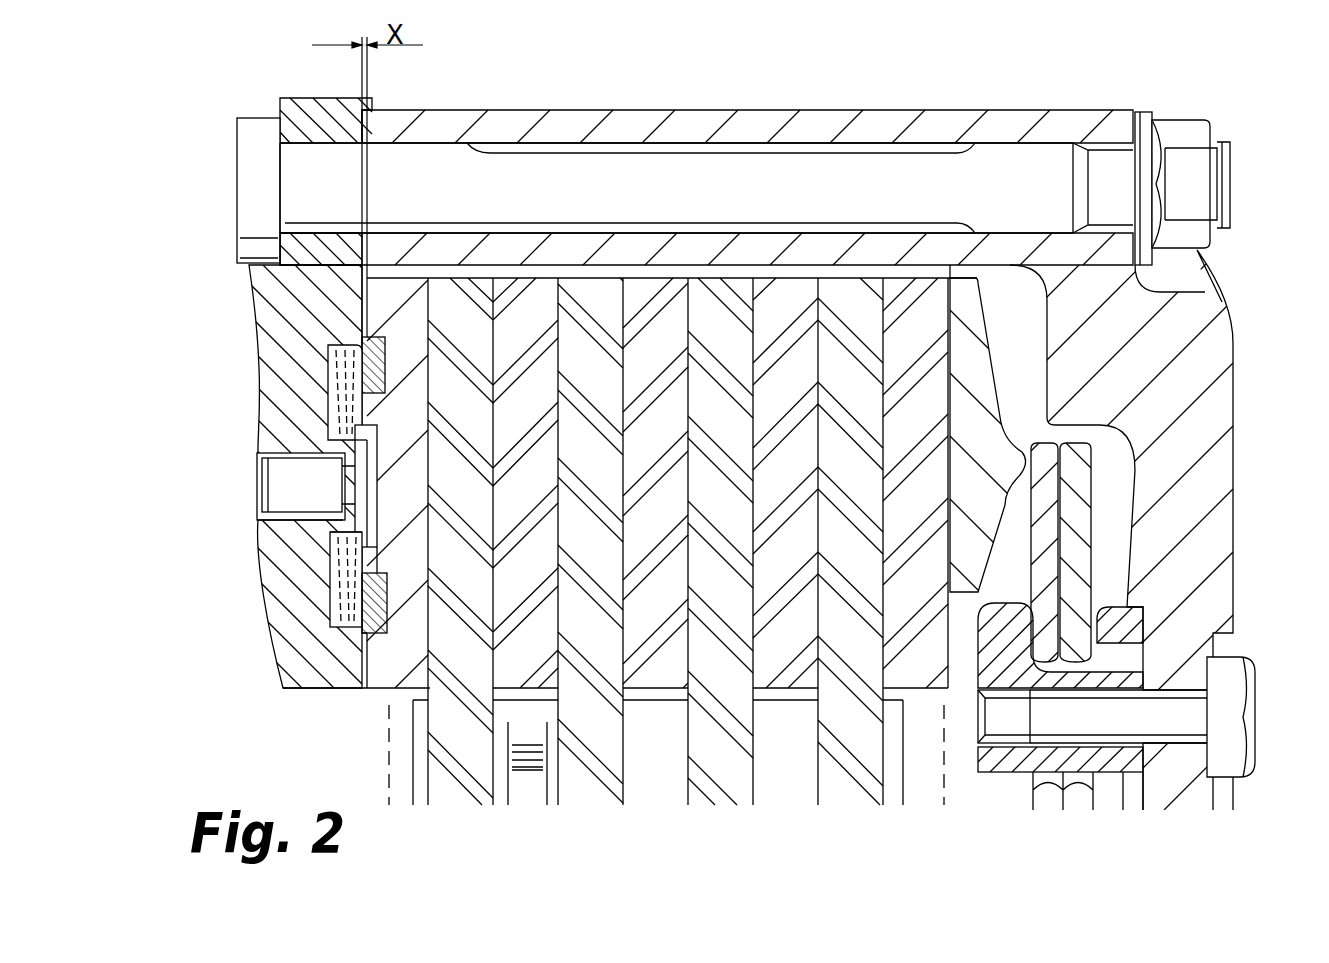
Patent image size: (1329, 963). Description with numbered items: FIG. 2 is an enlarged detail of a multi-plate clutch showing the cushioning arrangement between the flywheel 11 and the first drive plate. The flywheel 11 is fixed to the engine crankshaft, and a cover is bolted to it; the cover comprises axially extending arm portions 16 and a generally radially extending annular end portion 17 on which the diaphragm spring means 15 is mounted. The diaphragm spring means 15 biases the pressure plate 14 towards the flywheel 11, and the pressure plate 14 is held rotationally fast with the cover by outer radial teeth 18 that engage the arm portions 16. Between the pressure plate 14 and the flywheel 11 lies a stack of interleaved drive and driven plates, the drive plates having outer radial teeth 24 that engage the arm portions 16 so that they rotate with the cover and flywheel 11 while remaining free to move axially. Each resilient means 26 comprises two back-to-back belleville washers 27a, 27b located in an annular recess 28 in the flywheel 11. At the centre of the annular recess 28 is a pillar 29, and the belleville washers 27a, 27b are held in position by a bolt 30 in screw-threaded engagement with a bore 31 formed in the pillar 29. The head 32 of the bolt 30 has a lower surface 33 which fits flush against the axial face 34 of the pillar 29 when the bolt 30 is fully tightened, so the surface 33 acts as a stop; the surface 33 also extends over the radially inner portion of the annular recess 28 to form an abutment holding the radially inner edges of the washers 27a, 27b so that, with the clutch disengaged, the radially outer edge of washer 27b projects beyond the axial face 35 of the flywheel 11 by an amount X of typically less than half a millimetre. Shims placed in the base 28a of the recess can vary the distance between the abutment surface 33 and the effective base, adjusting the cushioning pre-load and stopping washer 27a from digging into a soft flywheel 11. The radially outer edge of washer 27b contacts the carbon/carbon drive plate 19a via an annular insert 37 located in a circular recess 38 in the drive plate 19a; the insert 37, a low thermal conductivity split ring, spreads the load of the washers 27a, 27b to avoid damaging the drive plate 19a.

The flywheel 11 is at (296, 108).
The pressure plate 14 is at (975, 372).
The diaphragm spring means 15 is at (1070, 518).
The arm portions 16 is at (945, 150).
The annular end portion 17 is at (1236, 347).
The outer radial teeth 18 is at (1152, 268).
The drive plate 19a is at (398, 297).
The outer radial teeth 24 is at (657, 270).
The resilient means 26 is at (247, 381).
The belleville washer 27a is at (337, 588).
The belleville washer 27b is at (357, 620).
The annular recess 28 is at (347, 343).
The base of the recess 28a is at (337, 347).
The pillar 29 is at (258, 520).
The bolt 30 is at (280, 477).
The bore 31 is at (264, 462).
The head 32 is at (368, 484).
The lower surface 33 is at (340, 537).
The axial face 34 is at (367, 445).
The axial face 35 is at (370, 647).
The annular insert 37 is at (378, 372).
The circular recess 38 is at (387, 553).